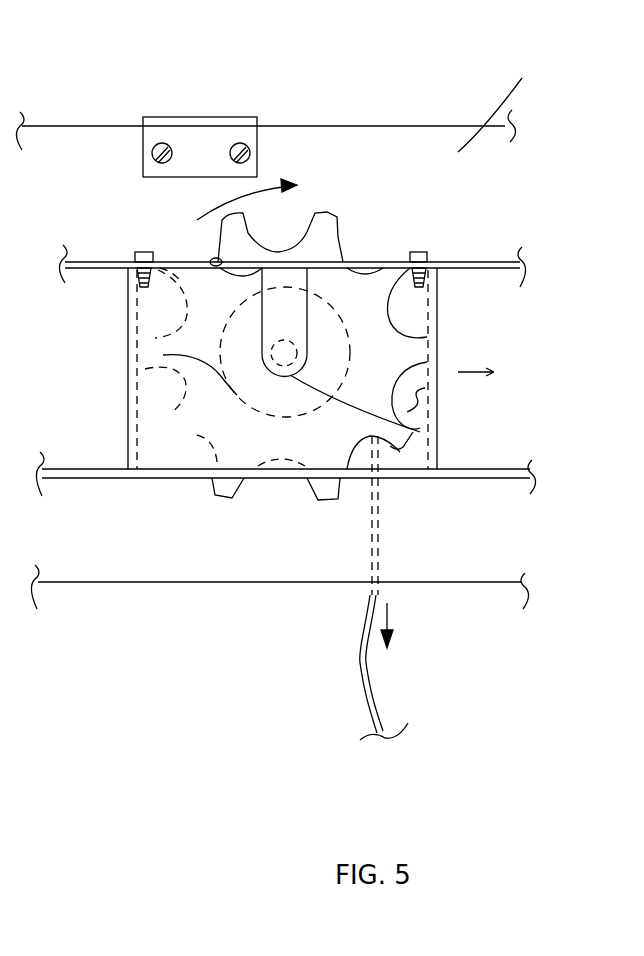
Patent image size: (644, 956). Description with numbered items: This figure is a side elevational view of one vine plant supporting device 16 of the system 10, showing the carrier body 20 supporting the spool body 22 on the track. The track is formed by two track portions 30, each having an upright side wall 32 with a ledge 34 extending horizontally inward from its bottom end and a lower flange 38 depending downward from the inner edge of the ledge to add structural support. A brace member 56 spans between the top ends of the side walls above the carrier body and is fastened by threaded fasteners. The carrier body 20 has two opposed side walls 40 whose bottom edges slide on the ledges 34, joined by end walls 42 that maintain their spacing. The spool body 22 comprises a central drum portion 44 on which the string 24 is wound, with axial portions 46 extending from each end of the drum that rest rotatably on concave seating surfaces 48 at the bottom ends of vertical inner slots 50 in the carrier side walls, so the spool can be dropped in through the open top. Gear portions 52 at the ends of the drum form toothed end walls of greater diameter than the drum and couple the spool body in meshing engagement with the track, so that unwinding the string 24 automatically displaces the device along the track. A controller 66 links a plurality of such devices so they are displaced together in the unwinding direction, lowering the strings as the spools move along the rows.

The system 10 is at (88, 90).
The vine plant supporting device 16 is at (119, 438).
The carrier body 20 is at (438, 303).
The spool body 22 is at (343, 249).
The string 24 is at (362, 655).
The track portion 30 is at (382, 124).
The upright side wall 32 is at (512, 103).
The ledge 34 is at (470, 478).
The lower flange 38 is at (437, 582).
The side wall of carrier body 40 is at (420, 395).
The end wall 42 is at (152, 315).
The central drum portion 44 is at (163, 355).
The axial portion 46 is at (300, 337).
The seating surface 48 is at (420, 432).
The inner slot 50 is at (217, 262).
The gear portion 52 is at (323, 232).
The brace member 56 is at (207, 130).
The controller 66 is at (467, 259).